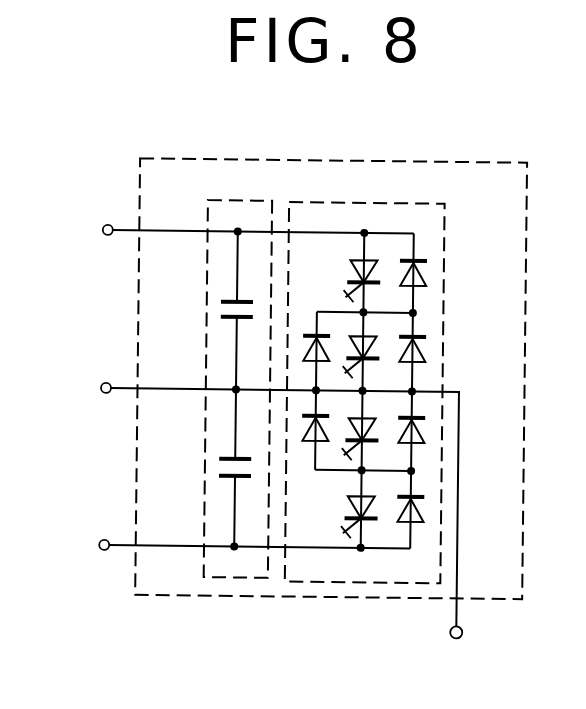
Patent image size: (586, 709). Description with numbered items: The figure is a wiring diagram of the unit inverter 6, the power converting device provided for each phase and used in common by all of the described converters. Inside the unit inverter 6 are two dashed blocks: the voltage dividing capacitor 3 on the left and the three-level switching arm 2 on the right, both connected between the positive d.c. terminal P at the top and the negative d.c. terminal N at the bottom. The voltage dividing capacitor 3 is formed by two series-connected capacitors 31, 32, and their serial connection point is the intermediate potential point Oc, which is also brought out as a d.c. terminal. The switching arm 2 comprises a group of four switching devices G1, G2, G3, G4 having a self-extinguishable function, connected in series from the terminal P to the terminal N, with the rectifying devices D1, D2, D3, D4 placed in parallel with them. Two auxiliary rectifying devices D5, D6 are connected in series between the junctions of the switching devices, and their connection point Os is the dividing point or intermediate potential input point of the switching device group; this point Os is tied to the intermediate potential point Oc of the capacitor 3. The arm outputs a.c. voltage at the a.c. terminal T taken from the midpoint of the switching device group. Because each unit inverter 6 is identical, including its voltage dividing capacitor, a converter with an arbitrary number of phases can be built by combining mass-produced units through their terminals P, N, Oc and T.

The 3-level switching arm 2 is at (437, 202).
The voltage dividing capacitor 3 is at (248, 201).
The unit inverter 6 is at (425, 160).
The capacitor 31 is at (221, 305).
The capacitor 32 is at (221, 472).
The rectifying device D1 is at (425, 270).
The rectifying device D2 is at (425, 355).
The rectifying device D3 is at (425, 430).
The rectifying device D4 is at (425, 514).
The auxiliary rectifying device D5 is at (303, 347).
The auxiliary rectifying device D6 is at (303, 427).
The switching device G1 is at (350, 270).
The switching device G2 is at (380, 345).
The switching device G3 is at (380, 440).
The switching device G4 is at (350, 509).
The d.c. terminal P is at (101, 232).
The d.c. terminal N is at (101, 548).
The intermediate potential point Oc is at (101, 390).
The connection point between auxiliary rectifying devices Os is at (289, 350).
The a.c. terminal T is at (455, 646).